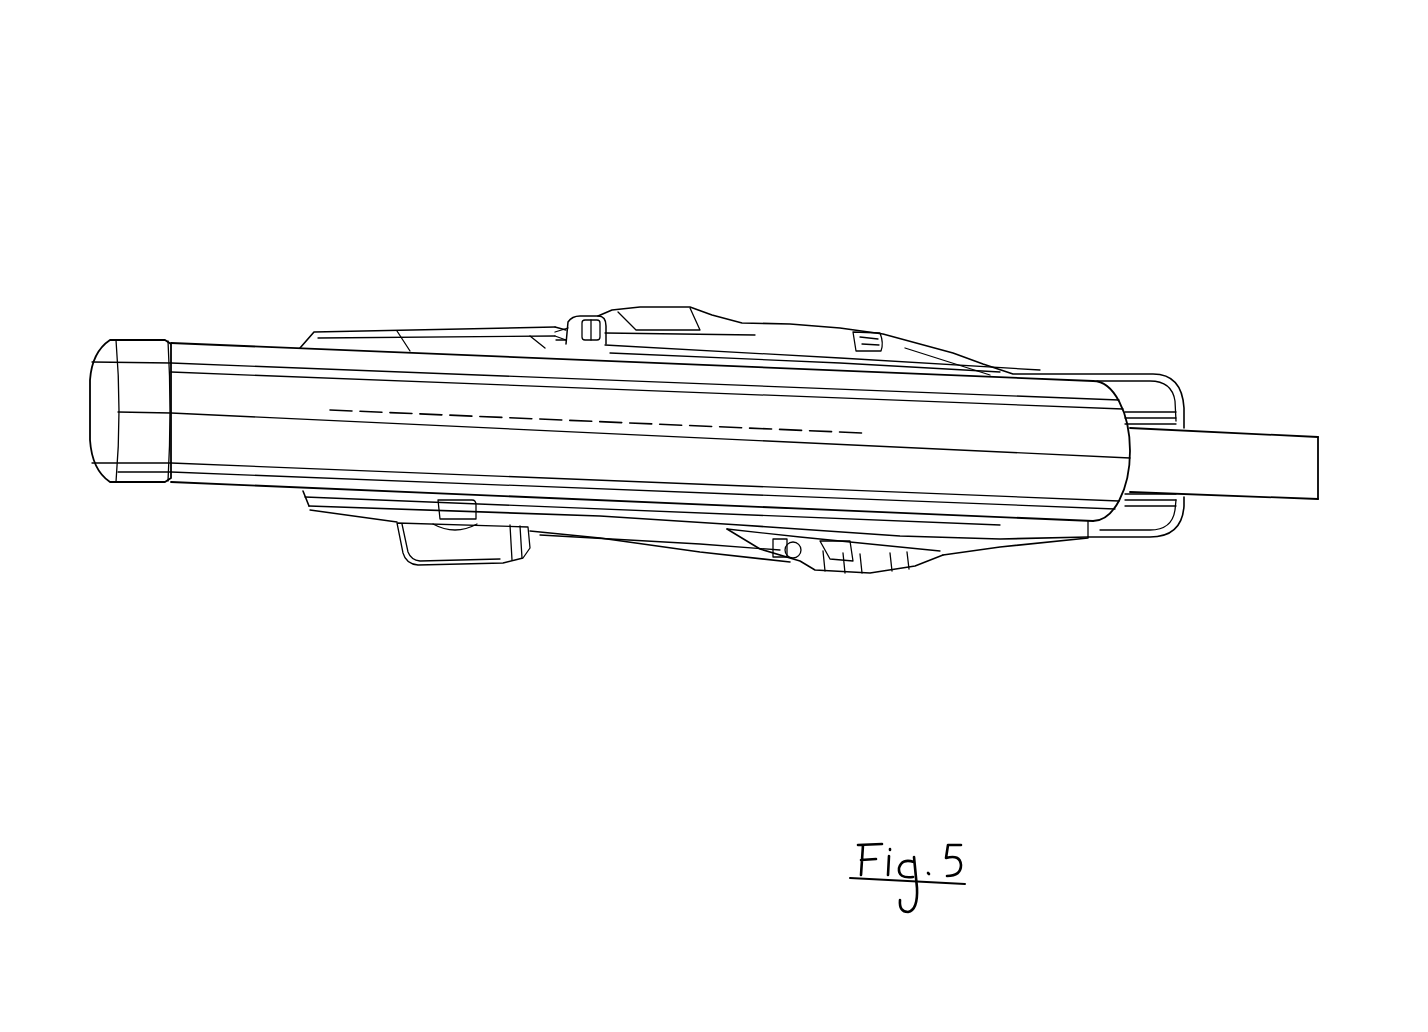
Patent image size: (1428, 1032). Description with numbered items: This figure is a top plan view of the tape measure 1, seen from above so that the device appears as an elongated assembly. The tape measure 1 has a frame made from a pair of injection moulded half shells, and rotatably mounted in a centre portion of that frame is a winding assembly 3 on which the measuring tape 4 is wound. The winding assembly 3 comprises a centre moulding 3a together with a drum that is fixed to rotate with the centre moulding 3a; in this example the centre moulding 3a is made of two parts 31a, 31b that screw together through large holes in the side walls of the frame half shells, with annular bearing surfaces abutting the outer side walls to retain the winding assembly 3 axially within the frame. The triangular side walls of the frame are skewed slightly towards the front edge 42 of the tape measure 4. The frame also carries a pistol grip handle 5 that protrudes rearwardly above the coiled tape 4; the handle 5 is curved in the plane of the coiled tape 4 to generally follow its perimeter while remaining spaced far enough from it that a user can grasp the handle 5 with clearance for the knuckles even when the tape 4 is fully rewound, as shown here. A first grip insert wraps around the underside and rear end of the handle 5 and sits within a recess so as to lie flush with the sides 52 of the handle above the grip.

The tape measure 1 is at (990, 144).
The winding assembly 3 is at (753, 333).
The centre moulding 3a is at (943, 555).
The part of centre moulding 31a is at (686, 551).
The part of centre moulding 31b is at (690, 330).
The measuring tape 4 is at (1227, 460).
The front edge 42 is at (1320, 467).
The pistol grip handle 5 is at (448, 412).
The sides of the handle 52 is at (323, 455).